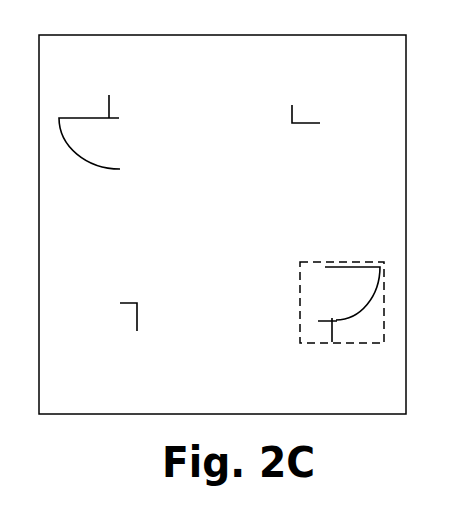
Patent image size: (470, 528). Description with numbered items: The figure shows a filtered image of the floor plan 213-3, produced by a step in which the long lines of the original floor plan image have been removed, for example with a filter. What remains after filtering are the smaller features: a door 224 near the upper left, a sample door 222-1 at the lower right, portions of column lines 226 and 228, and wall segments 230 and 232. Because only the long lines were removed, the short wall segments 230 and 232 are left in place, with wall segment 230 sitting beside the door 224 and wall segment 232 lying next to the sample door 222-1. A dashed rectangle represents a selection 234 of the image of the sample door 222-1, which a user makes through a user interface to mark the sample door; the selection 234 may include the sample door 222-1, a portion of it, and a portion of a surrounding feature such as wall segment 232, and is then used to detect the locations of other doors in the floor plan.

The filtered image of the floor plan 213-3 is at (39, 415).
The door 224 is at (69, 113).
The wall segment 230 is at (120, 112).
The portion of column line 228 is at (293, 124).
The portion of column line 226 is at (138, 307).
The sample door 222-1 is at (342, 281).
The selection 234 is at (325, 260).
The wall segment 232 is at (336, 328).